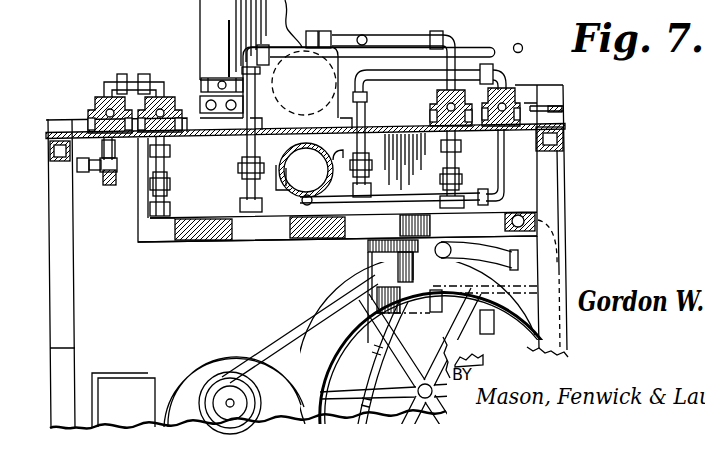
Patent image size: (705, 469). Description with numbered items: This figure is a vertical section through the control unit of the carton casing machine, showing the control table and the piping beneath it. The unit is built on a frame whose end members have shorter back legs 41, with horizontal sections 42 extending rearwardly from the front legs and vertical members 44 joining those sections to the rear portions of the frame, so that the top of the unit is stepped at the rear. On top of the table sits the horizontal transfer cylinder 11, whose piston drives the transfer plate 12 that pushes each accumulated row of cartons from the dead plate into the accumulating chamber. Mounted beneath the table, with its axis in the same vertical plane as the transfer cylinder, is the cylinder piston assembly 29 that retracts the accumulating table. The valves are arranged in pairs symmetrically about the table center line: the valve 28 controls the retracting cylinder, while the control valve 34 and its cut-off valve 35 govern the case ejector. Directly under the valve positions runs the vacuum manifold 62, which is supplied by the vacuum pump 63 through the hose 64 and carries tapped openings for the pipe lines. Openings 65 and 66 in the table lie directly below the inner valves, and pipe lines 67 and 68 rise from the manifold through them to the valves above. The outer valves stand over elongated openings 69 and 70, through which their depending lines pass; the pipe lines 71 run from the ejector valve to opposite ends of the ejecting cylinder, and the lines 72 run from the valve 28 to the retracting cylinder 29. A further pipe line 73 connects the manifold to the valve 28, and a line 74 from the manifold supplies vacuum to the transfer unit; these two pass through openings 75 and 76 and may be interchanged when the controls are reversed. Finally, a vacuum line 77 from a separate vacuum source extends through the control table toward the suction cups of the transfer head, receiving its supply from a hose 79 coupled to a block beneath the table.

The horizontal transfer cylinder 11 is at (318, 68).
The transfer plate 12 is at (203, 27).
The valve 28 is at (514, 90).
The cylinder piston assembly 29 is at (281, 190).
The control valve 34 is at (98, 103).
The cut-off valve 35 is at (166, 97).
The back legs 41 is at (53, 358).
The horizontal sections 42 is at (52, 169).
The vertical members 44 is at (62, 284).
The vacuum manifold 62 is at (272, 225).
The vacuum pump 63 is at (480, 366).
The hose 64 is at (565, 266).
The opening 65 is at (171, 142).
The opening 66 is at (440, 128).
The pipe line 67 is at (168, 180).
The pipe line 68 is at (457, 163).
The elongated opening 69 is at (118, 146).
The elongated opening 70 is at (513, 155).
The pipe lines 71 is at (108, 178).
The lines 72 is at (472, 193).
The pipe line 73 is at (370, 114).
The line 74 is at (477, 47).
The opening 75 is at (366, 134).
The opening 76 is at (247, 139).
The vacuum line 77 is at (521, 44).
The hose 79 is at (483, 256).